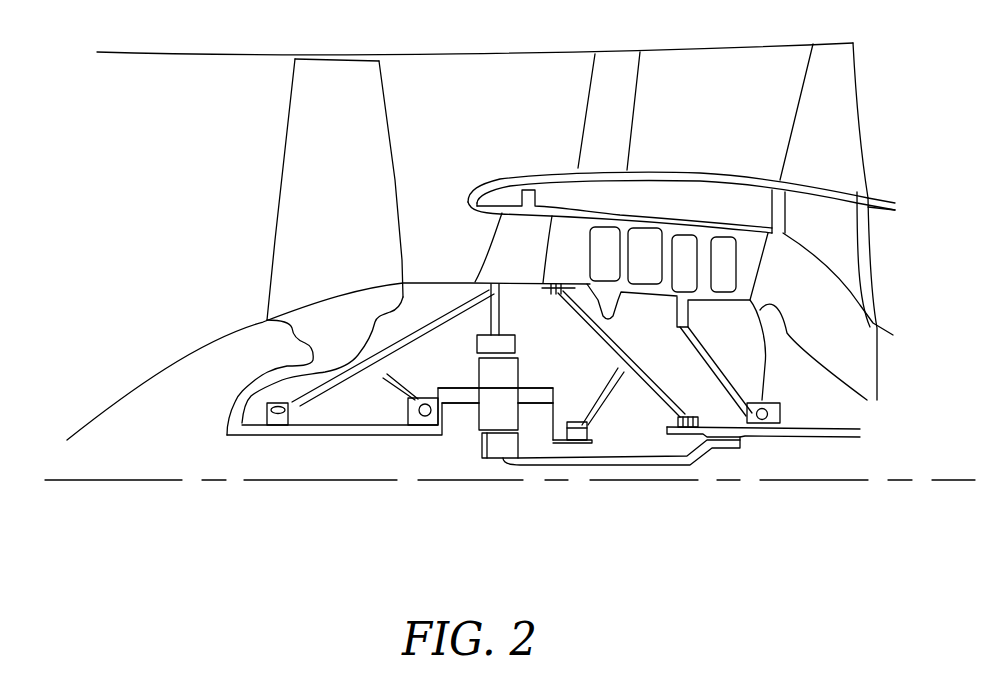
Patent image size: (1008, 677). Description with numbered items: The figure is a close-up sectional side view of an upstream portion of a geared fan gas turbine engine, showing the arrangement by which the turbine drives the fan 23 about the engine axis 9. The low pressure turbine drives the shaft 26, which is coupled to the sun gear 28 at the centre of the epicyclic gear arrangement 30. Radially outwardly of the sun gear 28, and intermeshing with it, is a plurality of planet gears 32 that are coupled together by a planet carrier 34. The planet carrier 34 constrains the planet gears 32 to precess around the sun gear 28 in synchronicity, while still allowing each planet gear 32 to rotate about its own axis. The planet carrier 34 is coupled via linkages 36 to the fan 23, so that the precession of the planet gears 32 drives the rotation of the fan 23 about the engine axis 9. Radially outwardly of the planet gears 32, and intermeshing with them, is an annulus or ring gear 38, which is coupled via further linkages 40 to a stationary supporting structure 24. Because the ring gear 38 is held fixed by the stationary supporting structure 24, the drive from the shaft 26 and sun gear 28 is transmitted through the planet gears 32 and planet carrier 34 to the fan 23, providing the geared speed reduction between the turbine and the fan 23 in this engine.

The engine axis 9 is at (163, 480).
The fan 23 is at (292, 170).
The stationary supporting structure 24 is at (502, 249).
The shaft 26 is at (628, 460).
The sun gear 28 is at (500, 448).
The epicyclic gear arrangement 30 is at (467, 430).
The planet gears 32 is at (488, 417).
The planet carrier 34 is at (547, 420).
The linkages 36 is at (455, 427).
The ring gear 38 is at (497, 343).
The linkages 40 is at (477, 335).